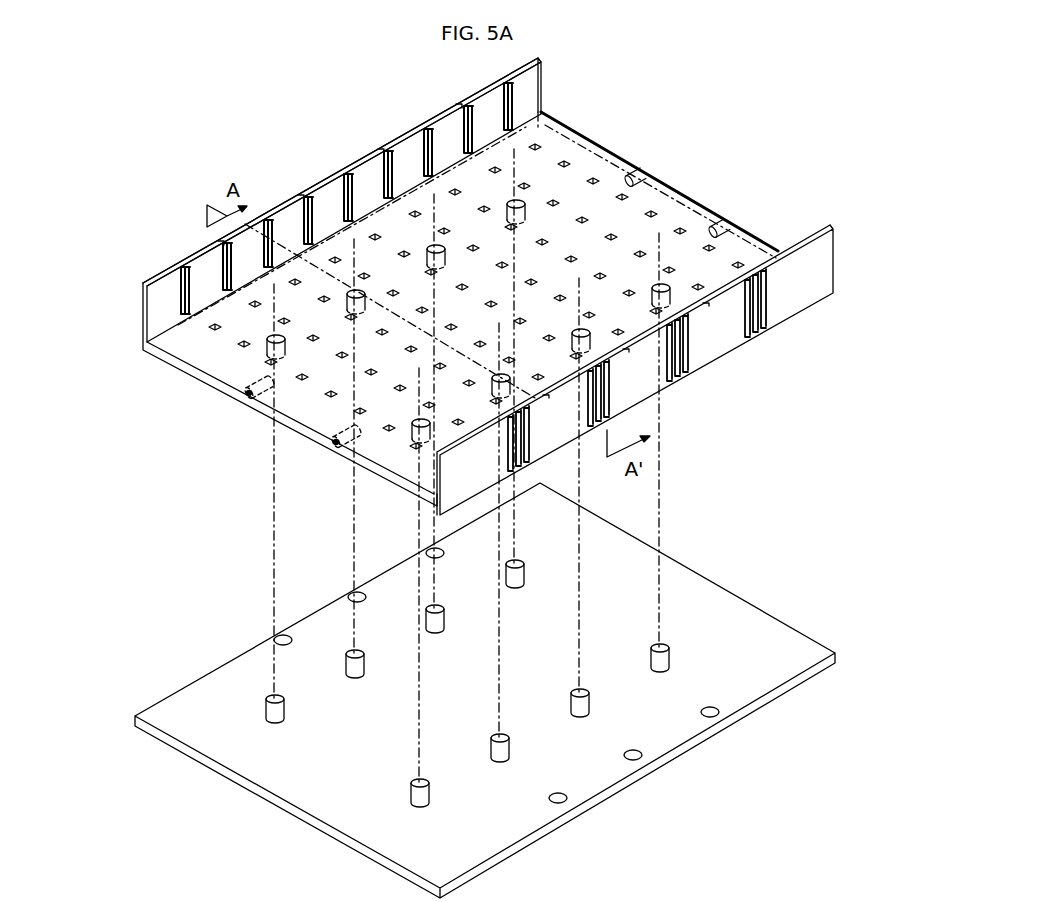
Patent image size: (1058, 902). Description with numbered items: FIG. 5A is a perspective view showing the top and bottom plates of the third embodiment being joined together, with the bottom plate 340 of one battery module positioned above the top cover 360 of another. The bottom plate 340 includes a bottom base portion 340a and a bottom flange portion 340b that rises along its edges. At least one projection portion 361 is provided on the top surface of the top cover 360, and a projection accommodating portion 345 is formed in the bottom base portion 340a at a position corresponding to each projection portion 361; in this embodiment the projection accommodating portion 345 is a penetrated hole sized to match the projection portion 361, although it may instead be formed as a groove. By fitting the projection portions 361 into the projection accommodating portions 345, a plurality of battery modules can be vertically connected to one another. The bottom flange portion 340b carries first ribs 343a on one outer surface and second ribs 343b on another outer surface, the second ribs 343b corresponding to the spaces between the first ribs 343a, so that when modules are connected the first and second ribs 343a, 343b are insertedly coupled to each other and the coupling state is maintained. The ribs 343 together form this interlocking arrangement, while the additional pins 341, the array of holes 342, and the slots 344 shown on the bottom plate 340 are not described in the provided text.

The bottom plate 340 is at (423, 410).
The bottom base portion 340a is at (147, 350).
The bottom flange portion 340b is at (150, 309).
The pins 341 is at (730, 222).
The holes 342 is at (413, 212).
The rails 343 is at (464, 162).
The first ribs 343a is at (786, 250).
The second ribs 343b is at (460, 102).
The slots 344 is at (183, 290).
The projection accommodating portion 345 is at (672, 292).
The top cover 360 is at (485, 690).
The projection portion 361 is at (434, 608).